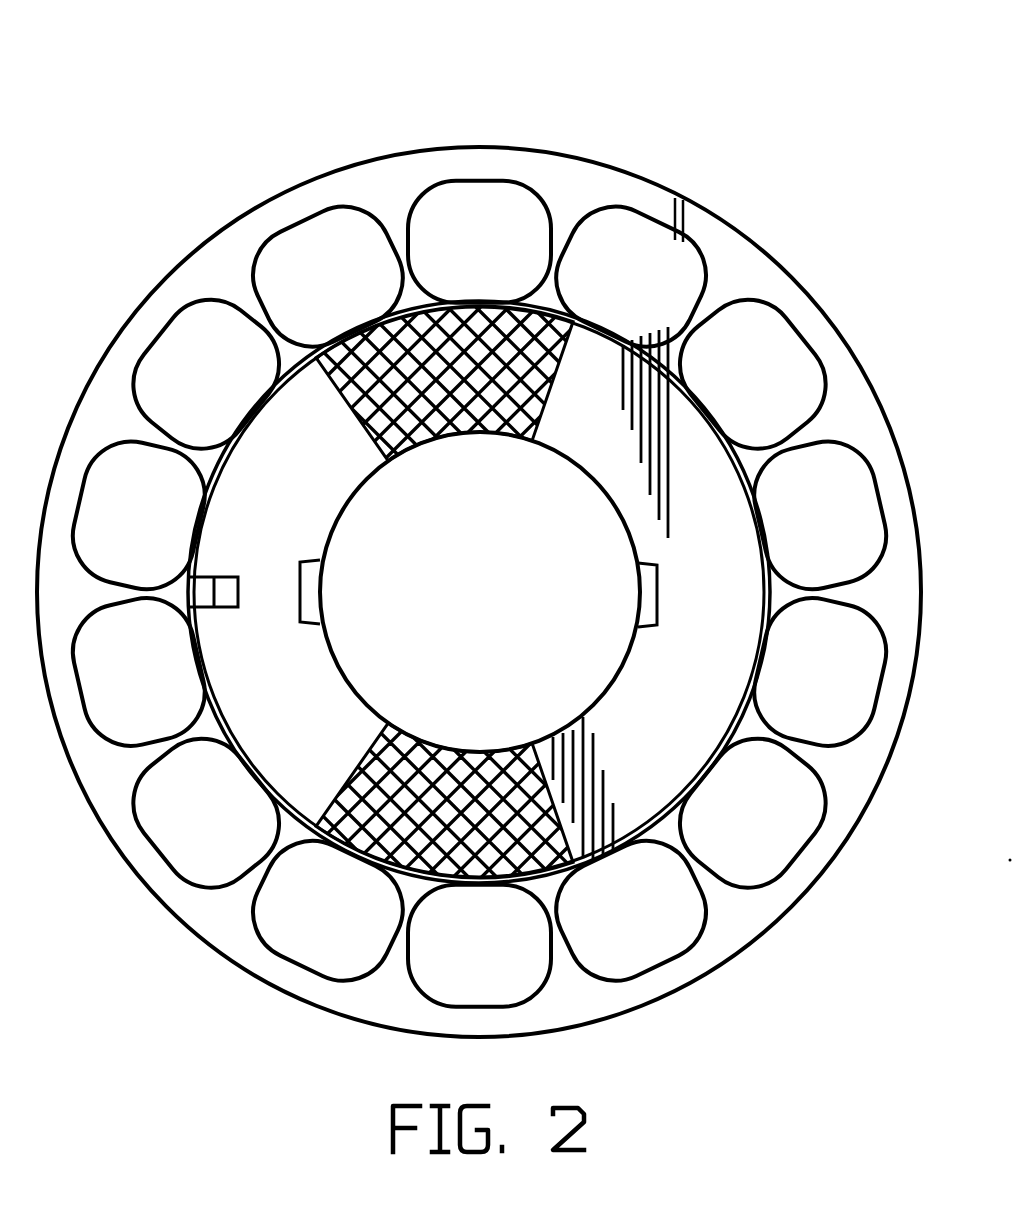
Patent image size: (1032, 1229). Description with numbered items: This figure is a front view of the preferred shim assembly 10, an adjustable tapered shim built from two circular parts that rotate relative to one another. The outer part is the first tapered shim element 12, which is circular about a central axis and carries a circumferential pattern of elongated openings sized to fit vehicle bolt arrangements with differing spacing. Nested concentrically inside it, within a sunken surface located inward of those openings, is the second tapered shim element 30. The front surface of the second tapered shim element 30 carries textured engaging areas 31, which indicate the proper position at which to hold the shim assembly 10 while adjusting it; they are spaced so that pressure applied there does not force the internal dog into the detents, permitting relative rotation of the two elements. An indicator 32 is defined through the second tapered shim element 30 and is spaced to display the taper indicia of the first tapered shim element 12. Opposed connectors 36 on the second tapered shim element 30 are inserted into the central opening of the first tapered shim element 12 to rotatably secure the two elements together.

The shim assembly 10 is at (660, 178).
The first tapered shim element 12 is at (738, 242).
The second tapered shim element 30 is at (628, 690).
The textured engaging areas 31 is at (460, 438).
The indicator 32 is at (226, 577).
The connectors 36 is at (320, 598).